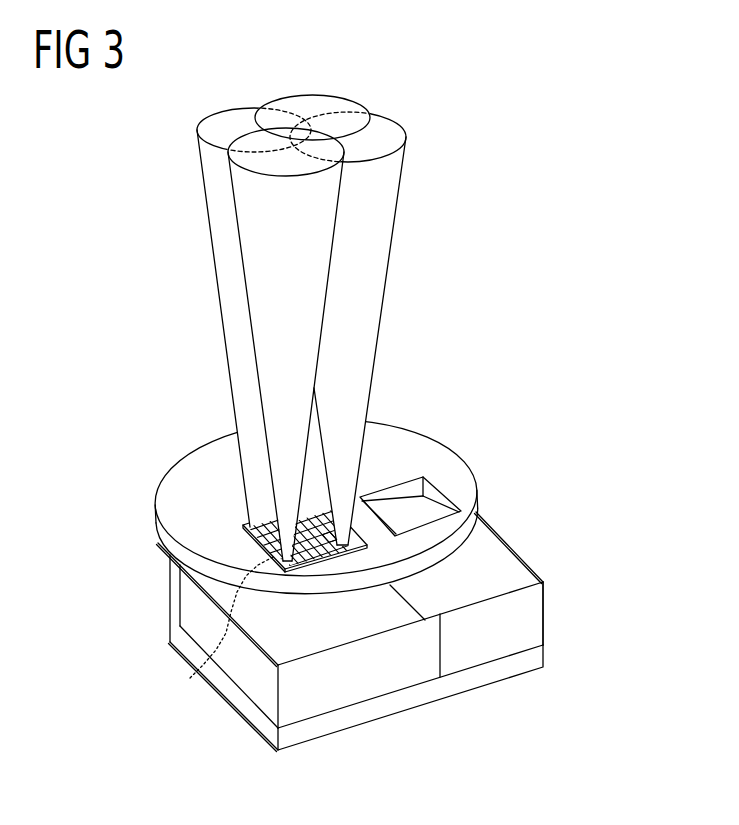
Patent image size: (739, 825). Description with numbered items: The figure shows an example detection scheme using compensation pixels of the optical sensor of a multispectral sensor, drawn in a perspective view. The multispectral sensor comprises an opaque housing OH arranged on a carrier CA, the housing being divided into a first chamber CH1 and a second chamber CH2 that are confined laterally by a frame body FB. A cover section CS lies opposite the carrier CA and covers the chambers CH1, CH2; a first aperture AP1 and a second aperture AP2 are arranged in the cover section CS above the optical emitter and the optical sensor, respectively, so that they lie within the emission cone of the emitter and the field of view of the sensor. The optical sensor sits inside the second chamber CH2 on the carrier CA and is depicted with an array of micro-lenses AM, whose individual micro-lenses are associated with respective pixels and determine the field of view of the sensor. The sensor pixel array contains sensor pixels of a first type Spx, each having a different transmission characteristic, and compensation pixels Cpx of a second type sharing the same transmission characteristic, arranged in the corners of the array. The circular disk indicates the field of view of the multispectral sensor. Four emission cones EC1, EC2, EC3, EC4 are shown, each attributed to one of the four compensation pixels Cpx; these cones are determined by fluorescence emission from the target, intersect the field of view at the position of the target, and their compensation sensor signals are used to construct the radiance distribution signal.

The emission cone EC1 is at (378, 328).
The emission cone EC2 is at (247, 344).
The emission cone EC3 is at (224, 317).
The emission cone EC4 is at (312, 85).
The first aperture AP1 is at (466, 476).
The first chamber CH1 is at (410, 506).
The second aperture AP2 is at (174, 631).
The second chamber CH2 is at (230, 618).
The sensor pixels of a first type Spx is at (213, 537).
The array of micro-lenses AM is at (219, 352).
The compensation pixels Cpx is at (341, 586).
The cover section CS is at (356, 617).
The frame body FB is at (142, 598).
The opaque housing OH is at (524, 629).
The carrier CA is at (356, 698).